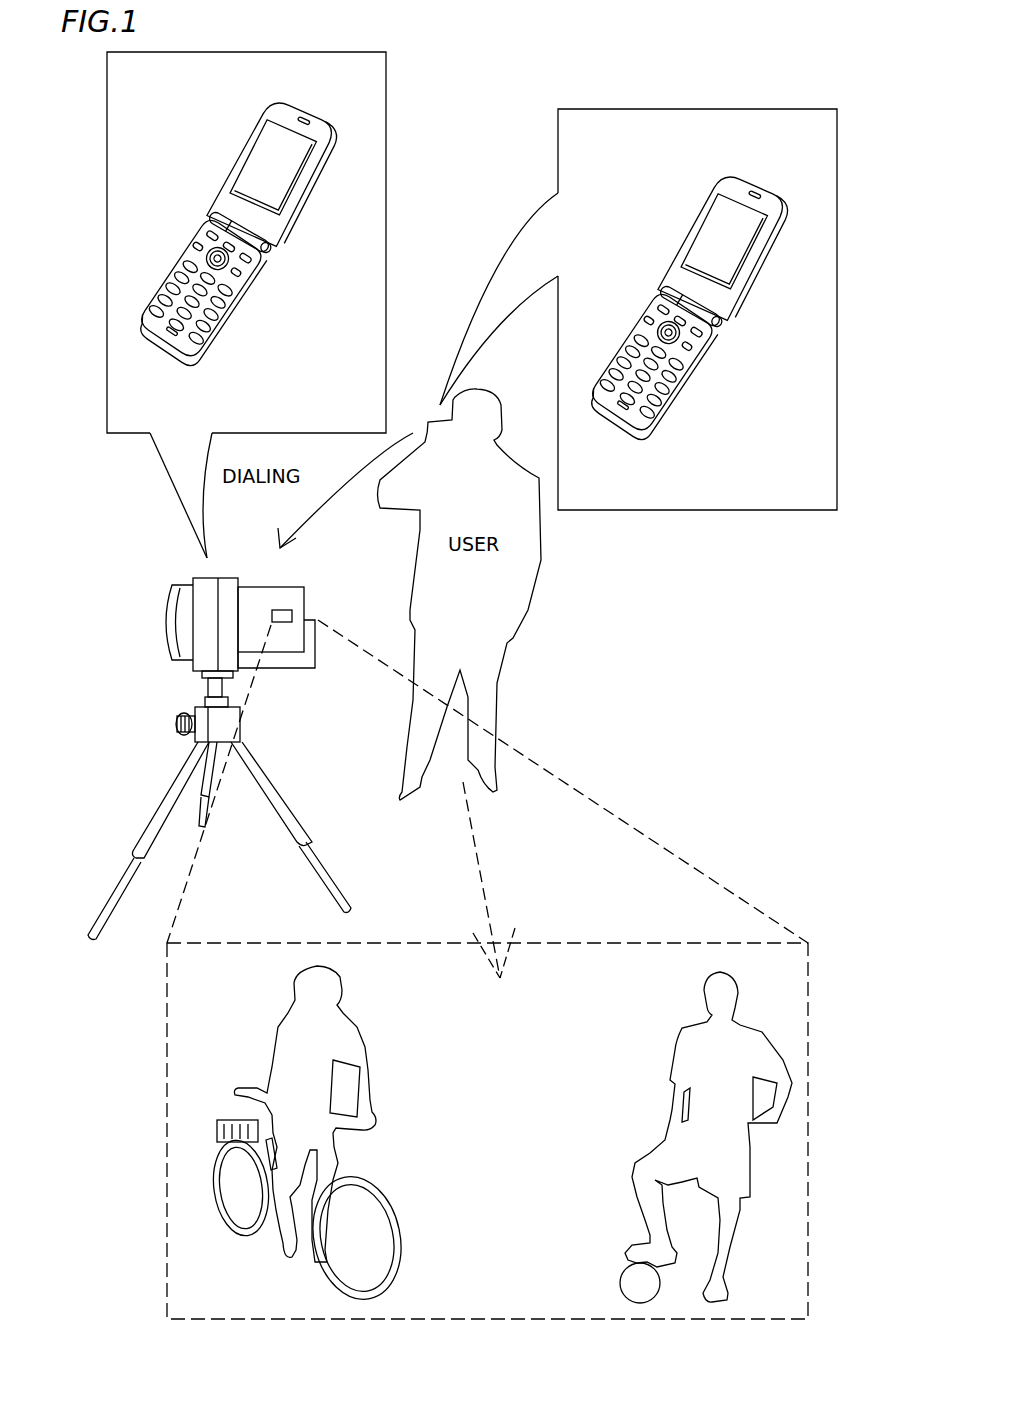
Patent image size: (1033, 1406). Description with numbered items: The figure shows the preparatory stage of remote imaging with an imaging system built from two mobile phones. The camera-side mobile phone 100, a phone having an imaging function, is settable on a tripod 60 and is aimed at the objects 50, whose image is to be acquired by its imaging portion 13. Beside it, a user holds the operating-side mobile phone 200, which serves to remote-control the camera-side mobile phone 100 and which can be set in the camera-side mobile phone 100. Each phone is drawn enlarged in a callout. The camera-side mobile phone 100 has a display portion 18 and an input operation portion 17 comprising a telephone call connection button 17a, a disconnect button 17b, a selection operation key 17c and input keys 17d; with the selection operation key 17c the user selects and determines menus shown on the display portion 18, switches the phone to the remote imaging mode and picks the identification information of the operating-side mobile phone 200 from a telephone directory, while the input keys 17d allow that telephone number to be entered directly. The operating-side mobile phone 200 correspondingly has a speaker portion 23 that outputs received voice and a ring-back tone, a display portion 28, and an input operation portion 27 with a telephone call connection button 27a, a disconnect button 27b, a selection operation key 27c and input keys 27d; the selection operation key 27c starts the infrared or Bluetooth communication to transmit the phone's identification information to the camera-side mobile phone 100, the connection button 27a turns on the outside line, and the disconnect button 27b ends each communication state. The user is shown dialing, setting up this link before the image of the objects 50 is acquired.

The camera-side mobile phone 100 is at (212, 147).
The operating-side mobile phone 200 is at (666, 222).
The imaging portion 13 is at (292, 603).
The input operation portion 17 is at (185, 333).
The telephone call connection button 17a is at (188, 268).
The disconnect button 17b is at (228, 285).
The selection operation key 17c is at (227, 258).
The input keys 17d is at (167, 293).
The display portion 18 is at (285, 175).
The speaker portion 23 is at (757, 192).
The input operation portion 27 is at (638, 411).
The telephone call connection button 27a is at (641, 352).
The disconnect button 27b is at (681, 364).
The selection operation key 27c is at (681, 338).
The input keys 27d is at (619, 376).
The display portion 28 is at (738, 252).
The objects 50 is at (737, 944).
The tripod 60 is at (265, 787).